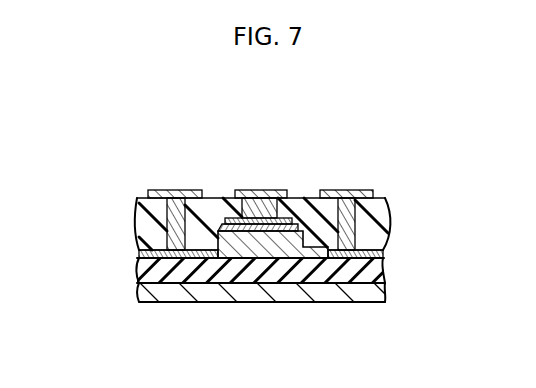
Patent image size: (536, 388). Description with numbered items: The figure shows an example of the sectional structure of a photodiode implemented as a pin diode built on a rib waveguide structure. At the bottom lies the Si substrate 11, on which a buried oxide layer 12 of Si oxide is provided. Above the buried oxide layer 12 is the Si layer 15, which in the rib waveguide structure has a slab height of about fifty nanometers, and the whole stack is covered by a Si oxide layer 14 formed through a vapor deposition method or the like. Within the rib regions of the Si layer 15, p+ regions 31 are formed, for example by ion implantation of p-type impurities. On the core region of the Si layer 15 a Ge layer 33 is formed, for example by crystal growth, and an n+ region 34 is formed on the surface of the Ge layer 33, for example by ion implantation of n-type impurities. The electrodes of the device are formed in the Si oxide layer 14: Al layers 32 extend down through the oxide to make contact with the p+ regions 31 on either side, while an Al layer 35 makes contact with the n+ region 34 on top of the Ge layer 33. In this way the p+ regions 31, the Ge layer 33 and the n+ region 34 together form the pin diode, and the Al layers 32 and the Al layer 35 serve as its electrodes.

The Si substrate 11 is at (373, 293).
The buried oxide layer 12 is at (370, 272).
The Si oxide layer 14 is at (380, 221).
The Si layer 15 is at (140, 253).
The p+ regions 31 is at (183, 268).
The Al layers 32 is at (177, 190).
The Ge layer 33 is at (220, 250).
The n+ region 34 is at (253, 197).
The Al layer 35 is at (270, 196).